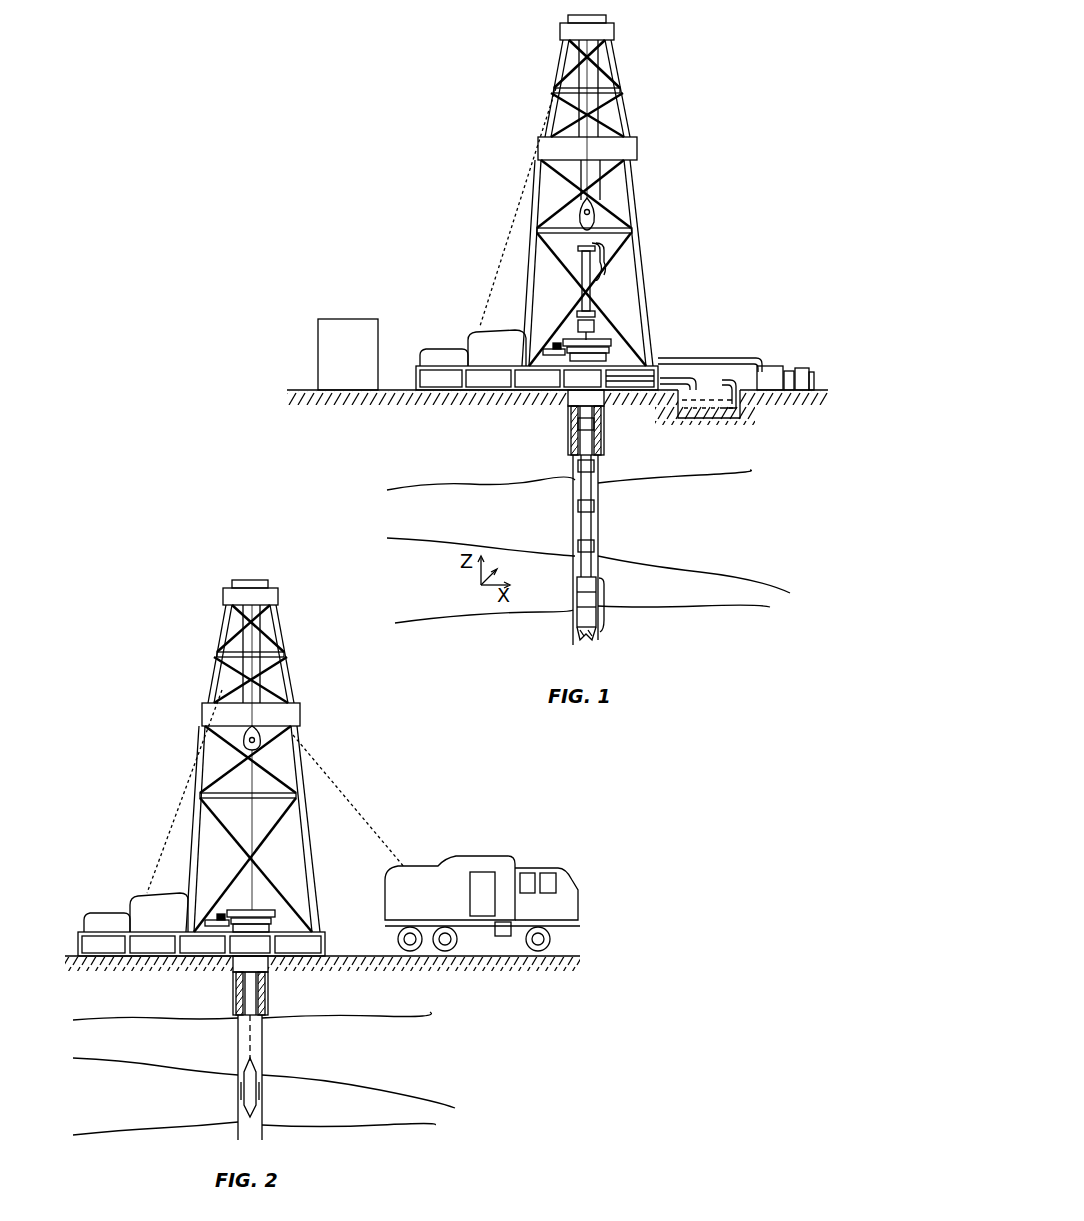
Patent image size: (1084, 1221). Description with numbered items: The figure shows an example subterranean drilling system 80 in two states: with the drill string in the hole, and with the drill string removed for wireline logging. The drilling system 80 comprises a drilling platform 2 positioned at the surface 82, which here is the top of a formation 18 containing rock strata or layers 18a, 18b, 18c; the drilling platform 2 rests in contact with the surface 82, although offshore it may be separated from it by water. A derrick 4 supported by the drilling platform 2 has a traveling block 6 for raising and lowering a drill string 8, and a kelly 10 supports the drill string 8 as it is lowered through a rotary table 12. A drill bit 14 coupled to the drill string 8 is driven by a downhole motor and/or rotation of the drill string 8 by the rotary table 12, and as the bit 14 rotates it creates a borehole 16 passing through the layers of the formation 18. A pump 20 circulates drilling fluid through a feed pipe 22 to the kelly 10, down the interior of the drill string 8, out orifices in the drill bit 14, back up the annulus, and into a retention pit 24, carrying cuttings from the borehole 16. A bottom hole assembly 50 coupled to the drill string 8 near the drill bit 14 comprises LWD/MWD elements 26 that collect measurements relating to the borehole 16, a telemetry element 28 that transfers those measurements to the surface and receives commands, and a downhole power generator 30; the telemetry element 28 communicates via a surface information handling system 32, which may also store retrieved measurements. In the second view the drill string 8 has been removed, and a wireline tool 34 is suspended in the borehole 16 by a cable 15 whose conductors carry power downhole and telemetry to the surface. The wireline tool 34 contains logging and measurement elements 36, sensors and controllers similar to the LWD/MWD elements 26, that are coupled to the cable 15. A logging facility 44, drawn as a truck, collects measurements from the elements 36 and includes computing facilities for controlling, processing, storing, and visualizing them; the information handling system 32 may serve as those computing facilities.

In FIG. 1, the drilling platform 2 is at (412, 368).
In FIG. 2, the drilling platform 2 is at (328, 946).
In FIG. 1, the derrick 4 is at (622, 108).
In FIG. 2, the derrick 4 is at (310, 842).
In FIG. 1, the traveling block 6 is at (592, 210).
In FIG. 2, the traveling block 6 is at (258, 740).
In FIG. 1, the drill string 8 is at (590, 475).
In FIG. 1, the kelly 10 is at (590, 258).
In FIG. 1, the rotary table 12 is at (610, 342).
In FIG. 2, the rotary table 12 is at (262, 908).
In FIG. 1, the drill bit 14 is at (592, 636).
In FIG. 2, the cable 15 is at (250, 995).
In FIG. 1, the borehole 16 is at (598, 495).
In FIG. 2, the borehole 16 is at (254, 1037).
In FIG. 1, the formation 18 is at (557, 416).
In FIG. 2, the formation 18 is at (322, 990).
In FIG. 1, the rock stratum 18a is at (420, 574).
In FIG. 2, the rock stratum 18a is at (420, 1001).
In FIG. 1, the rock stratum 18b is at (569, 494).
In FIG. 2, the rock stratum 18b is at (105, 1047).
In FIG. 1, the rock stratum 18c is at (740, 462).
In FIG. 2, the rock stratum 18c is at (105, 1122).
In FIG. 1, the pump 20 is at (770, 368).
In FIG. 1, the feed pipe 22 is at (712, 358).
In FIG. 1, the retention pit 24 is at (716, 412).
In FIG. 1, the LWD/MWD elements 26 is at (584, 600).
In FIG. 1, the telemetry element 28 is at (590, 588).
In FIG. 1, the downhole power generator 30 is at (578, 618).
In FIG. 1, the surface information handling system 32 is at (359, 360).
In FIG. 2, the wireline tool 34 is at (245, 1075).
In FIG. 2, the logging and measurement elements 36 is at (242, 1095).
In FIG. 2, the logging facility 44 is at (462, 858).
In FIG. 1, the bottom hole assembly 50 is at (604, 606).
In FIG. 1, the subterranean drilling system 80 is at (727, 162).
In FIG. 1, the surface 82 is at (300, 388).
In FIG. 2, the surface 82 is at (78, 952).